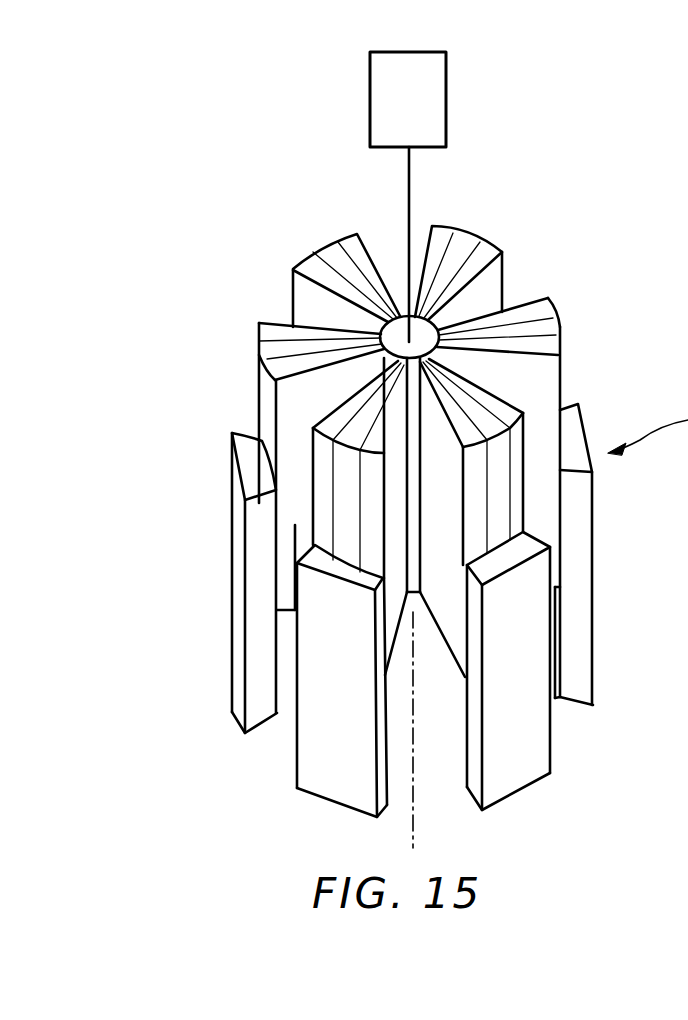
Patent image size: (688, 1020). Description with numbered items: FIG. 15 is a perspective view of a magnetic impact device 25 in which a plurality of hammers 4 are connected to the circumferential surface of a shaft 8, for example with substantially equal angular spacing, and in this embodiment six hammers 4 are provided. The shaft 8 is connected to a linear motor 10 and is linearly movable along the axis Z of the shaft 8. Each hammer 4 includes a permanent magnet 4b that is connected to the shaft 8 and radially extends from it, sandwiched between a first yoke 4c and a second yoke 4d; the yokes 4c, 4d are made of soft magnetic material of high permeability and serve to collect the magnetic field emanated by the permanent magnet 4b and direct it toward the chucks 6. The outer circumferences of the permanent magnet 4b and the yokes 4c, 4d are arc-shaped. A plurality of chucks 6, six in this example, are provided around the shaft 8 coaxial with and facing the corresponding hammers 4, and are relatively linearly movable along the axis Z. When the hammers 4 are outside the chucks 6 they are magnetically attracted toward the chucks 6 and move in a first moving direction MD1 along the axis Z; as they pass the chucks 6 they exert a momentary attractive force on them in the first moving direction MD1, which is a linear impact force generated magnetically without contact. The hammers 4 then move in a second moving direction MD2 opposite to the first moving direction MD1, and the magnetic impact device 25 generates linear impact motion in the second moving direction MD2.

The linear motor 10 is at (440, 88).
The shaft 8 is at (409, 193).
The magnetic impact device 25 is at (460, 510).
The hammer 4 is at (315, 250).
The second yoke 4d is at (548, 300).
The permanent magnet 4b is at (555, 323).
The first yoke 4c is at (556, 348).
The chuck 6 is at (343, 788).
The axis Z is at (413, 812).
The first moving direction MD1 is at (178, 465).
The second moving direction MD2 is at (178, 573).